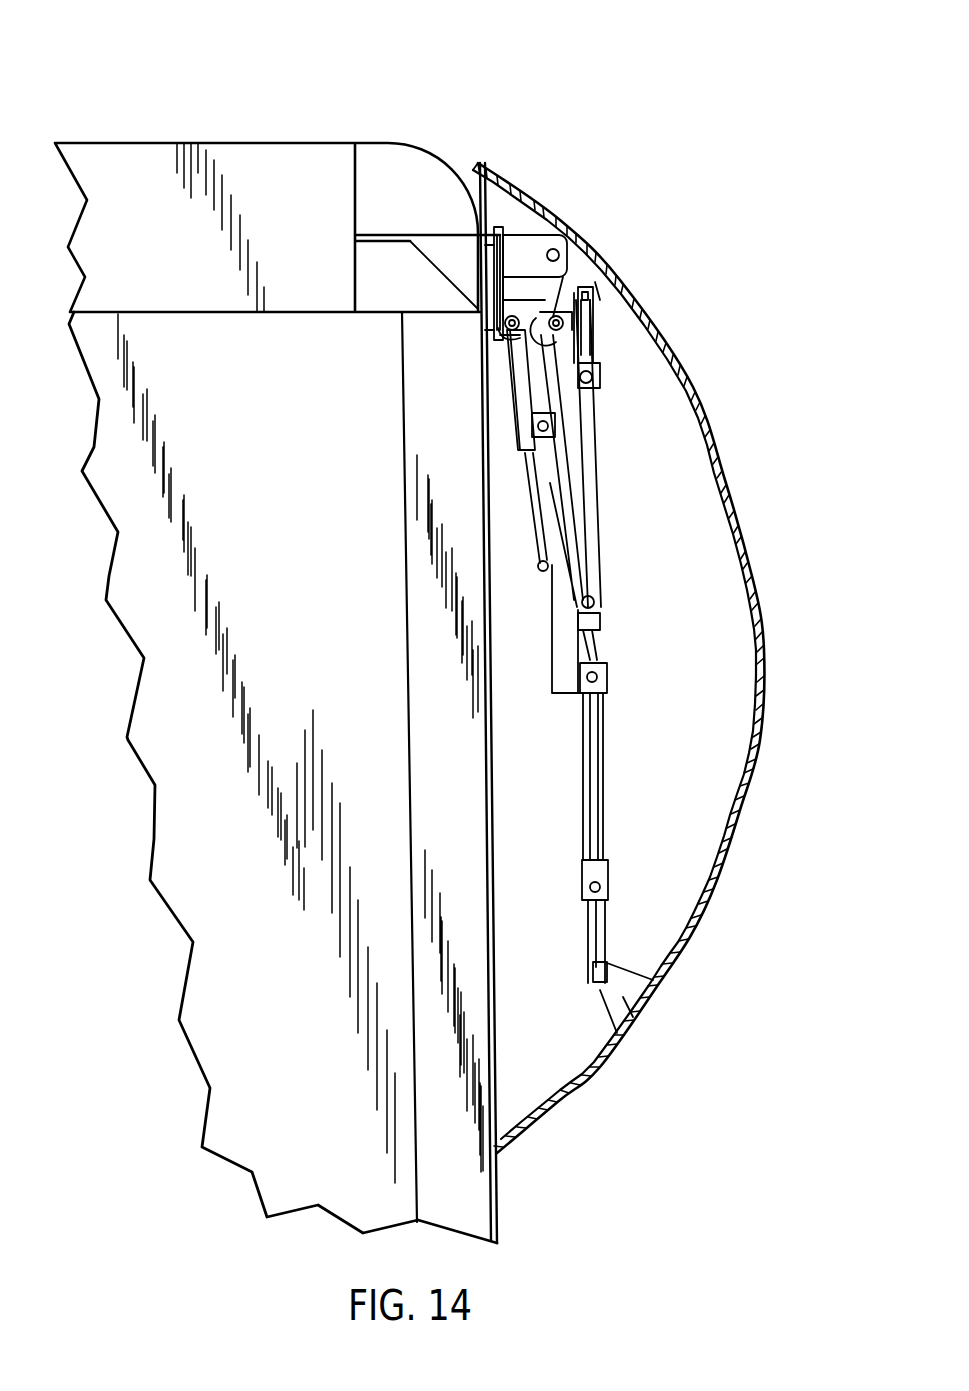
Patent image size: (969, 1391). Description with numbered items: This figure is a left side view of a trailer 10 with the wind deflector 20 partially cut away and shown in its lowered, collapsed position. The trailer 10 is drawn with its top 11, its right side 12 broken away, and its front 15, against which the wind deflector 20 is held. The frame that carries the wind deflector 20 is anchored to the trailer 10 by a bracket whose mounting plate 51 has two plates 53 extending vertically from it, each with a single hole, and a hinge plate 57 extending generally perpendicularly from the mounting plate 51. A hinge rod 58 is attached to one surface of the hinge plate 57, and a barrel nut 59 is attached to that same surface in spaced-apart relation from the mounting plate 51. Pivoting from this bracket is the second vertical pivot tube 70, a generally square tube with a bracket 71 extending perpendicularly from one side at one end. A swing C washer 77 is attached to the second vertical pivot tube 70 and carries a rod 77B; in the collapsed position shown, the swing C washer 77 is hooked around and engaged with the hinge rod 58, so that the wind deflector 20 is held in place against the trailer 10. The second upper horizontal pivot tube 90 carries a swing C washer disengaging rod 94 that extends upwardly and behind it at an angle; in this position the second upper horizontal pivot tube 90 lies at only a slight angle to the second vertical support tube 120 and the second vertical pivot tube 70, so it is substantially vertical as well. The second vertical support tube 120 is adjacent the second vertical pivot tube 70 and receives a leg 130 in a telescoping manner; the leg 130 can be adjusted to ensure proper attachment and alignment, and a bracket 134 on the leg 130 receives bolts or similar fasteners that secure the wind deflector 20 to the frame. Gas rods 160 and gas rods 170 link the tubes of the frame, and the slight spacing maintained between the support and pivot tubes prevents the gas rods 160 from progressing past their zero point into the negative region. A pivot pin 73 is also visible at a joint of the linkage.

The trailer 10 is at (110, 120).
The top 11 is at (235, 143).
The right side 12 is at (192, 815).
The front 15 is at (497, 1205).
The wind deflector 20 is at (763, 605).
The mounting plate 51 is at (477, 163).
The plate 53 is at (530, 243).
The hinge plate 57 is at (483, 318).
The hinge rod 58 is at (593, 303).
The barrel nut 59 is at (480, 313).
The second vertical pivot tube 70 is at (565, 653).
The bracket 71 is at (582, 700).
The pivot pin 73 is at (543, 568).
The swing C washer 77 is at (533, 340).
The rod 77B is at (520, 330).
The second upper horizontal pivot tube 90 is at (575, 520).
The swing C washer disengaging rod 94 is at (554, 318).
The second vertical support tube 120 is at (600, 782).
The leg 130 is at (592, 340).
The bracket 134 is at (595, 282).
The gas rod 160 is at (558, 463).
The gas rod 170 is at (520, 417).